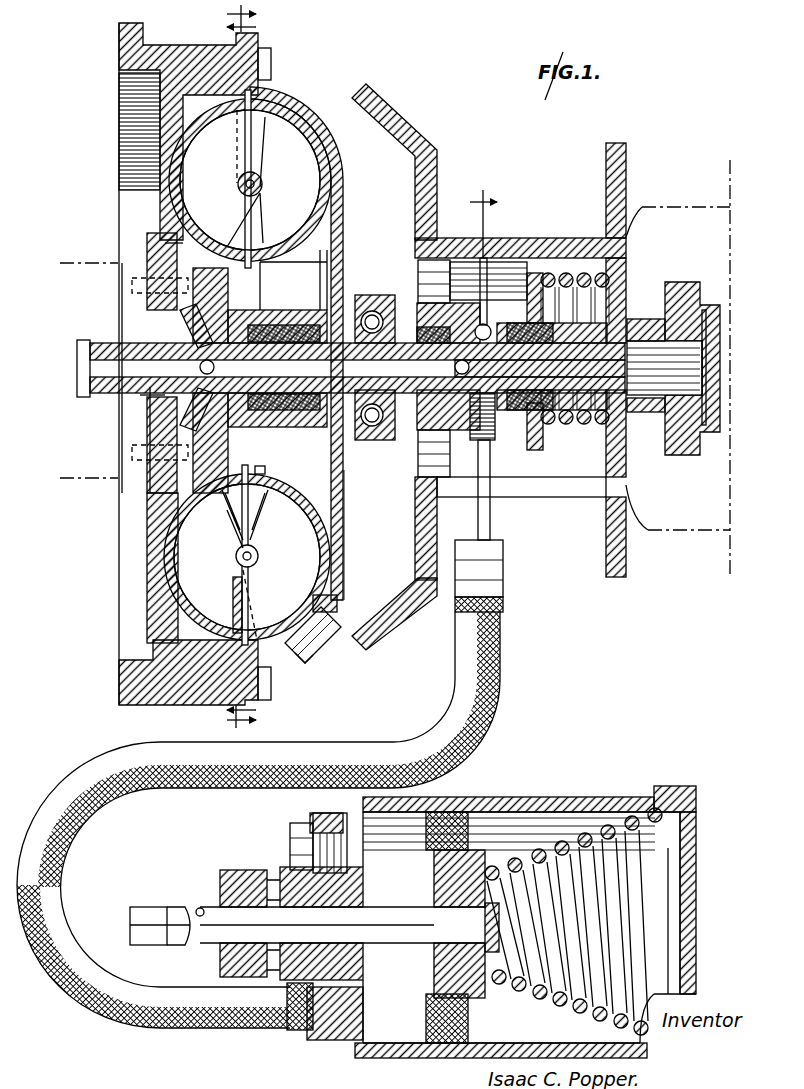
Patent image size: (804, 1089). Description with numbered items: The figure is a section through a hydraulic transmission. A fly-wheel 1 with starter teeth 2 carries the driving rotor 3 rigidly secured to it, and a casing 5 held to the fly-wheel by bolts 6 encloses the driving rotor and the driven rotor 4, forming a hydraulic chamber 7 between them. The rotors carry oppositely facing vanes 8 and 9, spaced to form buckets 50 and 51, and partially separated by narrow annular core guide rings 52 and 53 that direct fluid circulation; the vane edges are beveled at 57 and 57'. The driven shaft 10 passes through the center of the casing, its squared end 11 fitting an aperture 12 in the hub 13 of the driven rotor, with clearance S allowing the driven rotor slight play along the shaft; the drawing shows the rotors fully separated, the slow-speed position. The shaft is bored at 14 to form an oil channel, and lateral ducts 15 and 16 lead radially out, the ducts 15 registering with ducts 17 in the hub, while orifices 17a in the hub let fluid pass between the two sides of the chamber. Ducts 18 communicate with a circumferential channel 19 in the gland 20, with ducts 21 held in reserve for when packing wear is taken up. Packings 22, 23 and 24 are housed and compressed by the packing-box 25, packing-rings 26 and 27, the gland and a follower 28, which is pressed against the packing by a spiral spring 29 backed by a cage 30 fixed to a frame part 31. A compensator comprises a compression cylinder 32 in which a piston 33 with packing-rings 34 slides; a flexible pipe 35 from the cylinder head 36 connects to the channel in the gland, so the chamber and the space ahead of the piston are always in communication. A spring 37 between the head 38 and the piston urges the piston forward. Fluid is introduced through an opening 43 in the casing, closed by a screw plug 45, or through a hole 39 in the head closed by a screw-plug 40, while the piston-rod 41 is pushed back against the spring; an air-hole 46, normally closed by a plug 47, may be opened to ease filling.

The fly-wheel 1 is at (130, 190).
The teeth 2 is at (90, 718).
The driving rotor 3 is at (103, 122).
The driven rotor 4 is at (290, 110).
The casing 5 is at (340, 210).
The bolts 6 is at (480, 518).
The hydraulic chamber 7 is at (342, 493).
The vanes 8 is at (192, 150).
The vanes 9 is at (300, 143).
The driven shaft 10 is at (605, 372).
The squared end 11 is at (157, 400).
The aperture 12 is at (240, 280).
The hub 13 is at (200, 290).
The bore 14 is at (345, 305).
The lateral ducts 15 is at (188, 367).
The lateral ducts 16 is at (214, 367).
The ducts 17 is at (147, 318).
The orifices 17a is at (165, 243).
The ducts 18 is at (522, 318).
The circumferential channel 19 is at (487, 322).
The gland 20 is at (455, 297).
The ducts 21 is at (140, 393).
The packing 22 is at (290, 325).
The packing 23 is at (405, 322).
The packing 24 is at (550, 440).
The packing-box 25 is at (270, 437).
The packing-ring 26 is at (365, 430).
The packing-ring 27 is at (380, 430).
The follower 28 is at (575, 305).
The spiral spring 29 is at (622, 470).
The cage 30 is at (607, 317).
The frame part 31 is at (666, 533).
The compression cylinder 32 is at (582, 797).
The piston 33 is at (434, 970).
The packing-rings 34 is at (455, 812).
The pipe 35 is at (505, 655).
The head 36 is at (297, 885).
The spiral spring 37 is at (545, 998).
The head 38 is at (700, 912).
The hole 39 is at (335, 815).
The screw-plug 40 is at (290, 830).
The piston-rod 41 is at (172, 907).
The opening 43 is at (327, 630).
The screw plug 45 is at (317, 655).
The air-hole 46 is at (342, 584).
The plug 47 is at (338, 603).
The buckets 50 is at (247, 370).
The buckets 51 is at (271, 367).
The core guide ring 52 is at (240, 185).
The core guide ring 53 is at (262, 185).
The bevel 57 is at (247, 378).
The bevel 57' is at (252, 306).
The clearance S is at (172, 413).